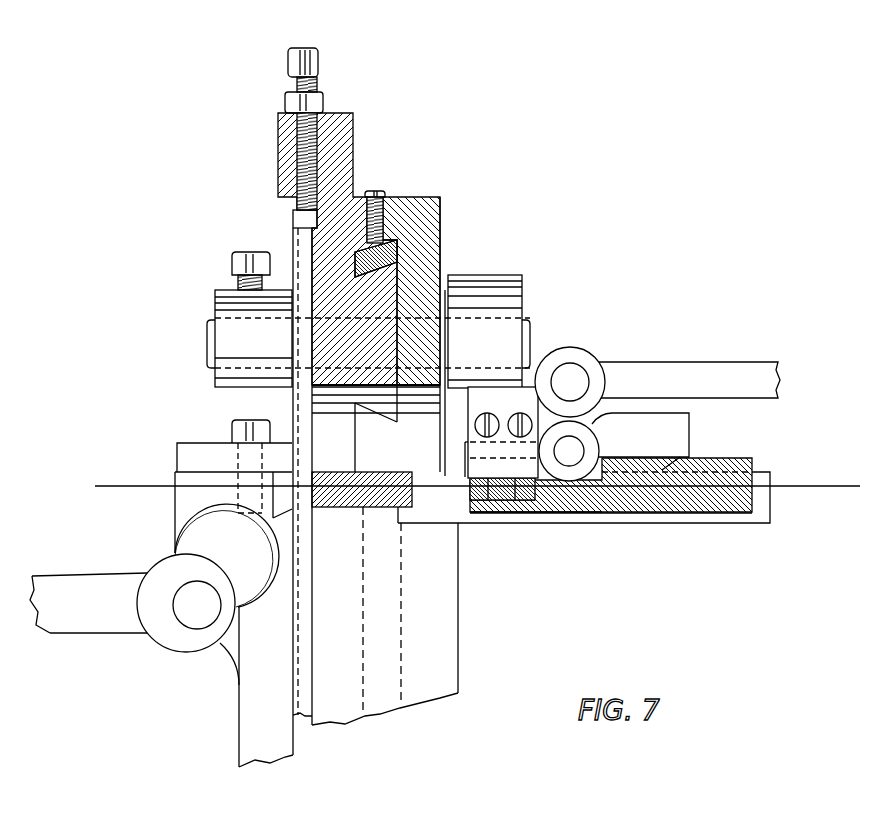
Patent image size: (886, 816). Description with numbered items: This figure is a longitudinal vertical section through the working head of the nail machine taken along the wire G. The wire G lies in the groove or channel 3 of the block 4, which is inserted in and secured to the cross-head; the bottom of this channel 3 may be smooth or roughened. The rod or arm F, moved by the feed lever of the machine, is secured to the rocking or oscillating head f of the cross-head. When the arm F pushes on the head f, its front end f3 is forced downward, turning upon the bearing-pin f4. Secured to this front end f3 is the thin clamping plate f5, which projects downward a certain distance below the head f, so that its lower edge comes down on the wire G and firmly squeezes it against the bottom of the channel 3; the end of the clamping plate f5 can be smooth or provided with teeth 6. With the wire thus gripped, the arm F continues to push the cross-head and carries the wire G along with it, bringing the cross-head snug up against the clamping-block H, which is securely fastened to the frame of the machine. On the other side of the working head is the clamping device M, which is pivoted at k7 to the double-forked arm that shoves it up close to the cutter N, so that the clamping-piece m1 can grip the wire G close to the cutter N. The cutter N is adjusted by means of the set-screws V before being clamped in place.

The set-screw V is at (297, 153).
The cutter N is at (304, 398).
The clamping device M is at (207, 519).
The clamping-piece m1 is at (283, 505).
The pivot k7 is at (197, 605).
The clamping-block H is at (412, 508).
The teeth 6 is at (470, 490).
The block 4 is at (510, 515).
The groove or channel 3 is at (548, 500).
The bearing-pin f4 is at (570, 451).
The clamping plate f5 is at (464, 472).
The front end f3 is at (483, 398).
The rocking or oscillating head f is at (640, 441).
The rod or arm F is at (687, 380).
The wire G is at (800, 481).